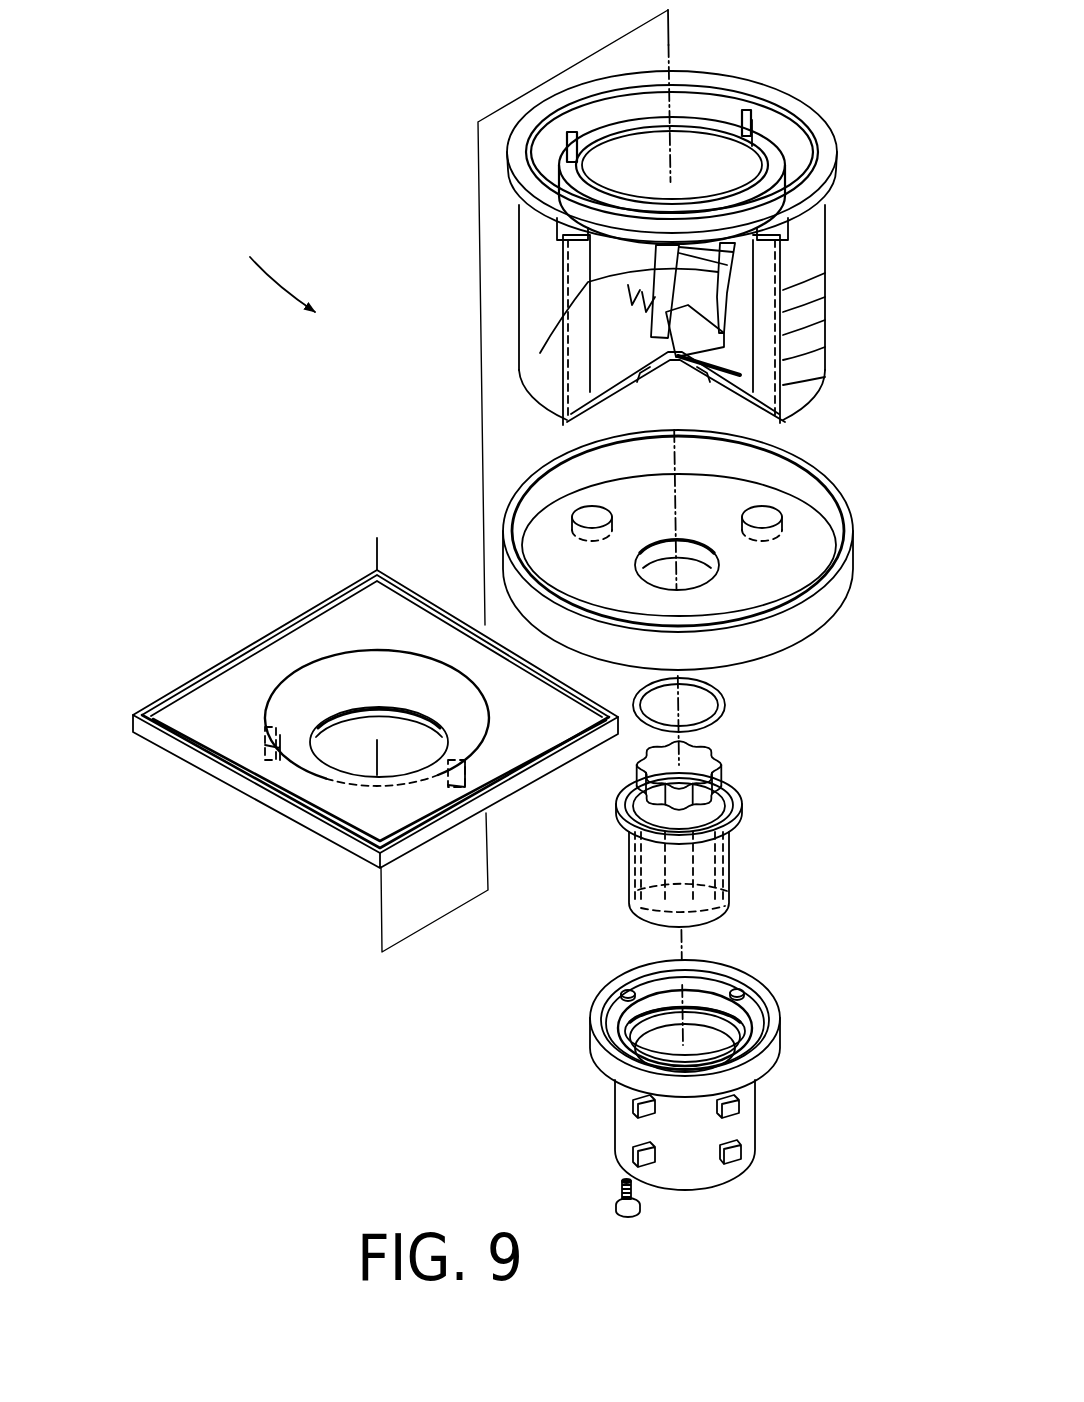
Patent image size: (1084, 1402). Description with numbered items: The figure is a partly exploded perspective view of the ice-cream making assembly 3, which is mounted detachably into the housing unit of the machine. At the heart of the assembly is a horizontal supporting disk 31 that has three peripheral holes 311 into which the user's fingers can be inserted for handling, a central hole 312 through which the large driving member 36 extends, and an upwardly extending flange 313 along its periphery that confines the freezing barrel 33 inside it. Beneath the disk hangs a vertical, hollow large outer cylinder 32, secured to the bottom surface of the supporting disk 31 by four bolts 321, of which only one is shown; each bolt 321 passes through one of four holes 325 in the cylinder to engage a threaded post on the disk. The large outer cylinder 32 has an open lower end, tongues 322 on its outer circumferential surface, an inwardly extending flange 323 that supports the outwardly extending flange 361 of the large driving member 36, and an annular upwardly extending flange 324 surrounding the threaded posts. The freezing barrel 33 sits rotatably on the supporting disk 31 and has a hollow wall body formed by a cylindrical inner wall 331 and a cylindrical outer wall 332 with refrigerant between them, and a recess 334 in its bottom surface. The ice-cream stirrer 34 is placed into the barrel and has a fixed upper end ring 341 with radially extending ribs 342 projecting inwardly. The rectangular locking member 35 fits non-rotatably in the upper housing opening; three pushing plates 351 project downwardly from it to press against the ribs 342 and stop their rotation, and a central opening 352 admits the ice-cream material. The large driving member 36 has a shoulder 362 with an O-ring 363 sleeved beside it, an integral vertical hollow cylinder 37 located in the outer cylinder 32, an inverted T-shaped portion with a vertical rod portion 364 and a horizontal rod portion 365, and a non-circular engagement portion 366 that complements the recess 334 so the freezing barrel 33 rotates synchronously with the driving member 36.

The ice-cream making assembly 3 is at (273, 265).
The supporting disk 31 is at (834, 622).
The peripheral holes 311 is at (773, 515).
The central hole 312 is at (695, 573).
The upwardly extending flange 313 is at (820, 470).
The large outer cylinder 32 is at (780, 1048).
The bolts 321 is at (618, 1200).
The tongues 322 is at (753, 1147).
The inwardly extending flange 323 is at (703, 1008).
The annular upwardly extending flange 324 is at (770, 1012).
The holes 325 is at (618, 994).
The freezing barrel 33 is at (836, 220).
The cylindrical inner wall 331 is at (748, 355).
The cylindrical outer wall 332 is at (790, 385).
The recess 334 is at (715, 340).
The ice-cream stirrer 34 is at (620, 323).
The upper end ring 341 is at (762, 124).
The ribs 342 is at (744, 110).
The locking member 35 is at (320, 843).
The pushing plates 351 is at (263, 760).
The central opening 352 is at (350, 738).
The large driving member 36 is at (723, 815).
The outwardly extending flange 361 is at (621, 798).
The shoulder 362 is at (733, 788).
The O-ring 363 is at (725, 699).
The vertical rod portion 364 is at (672, 857).
The horizontal rod portion 365 is at (727, 898).
The engagement portion 366 is at (695, 757).
The vertical hollow cylinder 37 is at (647, 922).